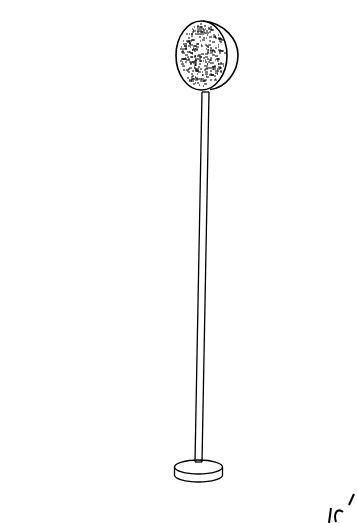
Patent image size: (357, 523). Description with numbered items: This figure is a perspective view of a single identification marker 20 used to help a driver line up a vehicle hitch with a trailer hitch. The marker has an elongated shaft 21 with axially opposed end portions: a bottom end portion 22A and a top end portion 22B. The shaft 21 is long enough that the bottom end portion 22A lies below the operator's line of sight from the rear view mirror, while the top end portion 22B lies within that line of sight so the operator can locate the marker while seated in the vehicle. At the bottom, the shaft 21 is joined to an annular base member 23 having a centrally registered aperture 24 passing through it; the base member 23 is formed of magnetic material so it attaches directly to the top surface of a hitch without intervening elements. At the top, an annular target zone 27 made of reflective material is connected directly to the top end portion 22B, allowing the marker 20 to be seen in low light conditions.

The identification marker 20 is at (97, 81).
The elongated shaft 21 is at (207, 258).
The bottom end portion 22A is at (200, 465).
The top end portion 22B is at (209, 97).
The annular base member 23 is at (222, 477).
The centrally registered aperture 24 is at (210, 467).
The target zone 27 is at (204, 54).